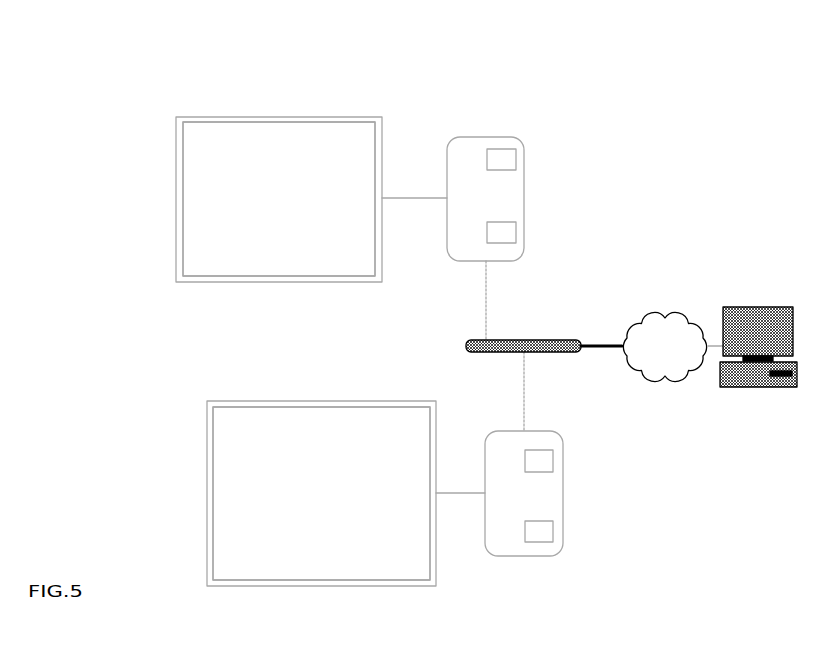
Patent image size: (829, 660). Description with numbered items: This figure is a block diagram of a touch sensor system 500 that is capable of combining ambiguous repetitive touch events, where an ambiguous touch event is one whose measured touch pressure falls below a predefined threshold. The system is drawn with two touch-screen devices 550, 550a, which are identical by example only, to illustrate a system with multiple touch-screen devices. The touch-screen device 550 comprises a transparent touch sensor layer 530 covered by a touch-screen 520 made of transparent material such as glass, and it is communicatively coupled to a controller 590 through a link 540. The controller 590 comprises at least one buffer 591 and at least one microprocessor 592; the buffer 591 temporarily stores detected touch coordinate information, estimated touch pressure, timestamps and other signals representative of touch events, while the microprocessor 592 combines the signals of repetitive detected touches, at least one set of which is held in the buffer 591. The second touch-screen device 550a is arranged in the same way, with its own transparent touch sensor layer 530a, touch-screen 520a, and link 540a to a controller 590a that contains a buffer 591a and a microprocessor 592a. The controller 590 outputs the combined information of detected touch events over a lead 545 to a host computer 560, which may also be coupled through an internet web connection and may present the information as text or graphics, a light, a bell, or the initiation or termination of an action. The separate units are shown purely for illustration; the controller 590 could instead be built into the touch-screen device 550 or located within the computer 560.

The touch sensor system 500 is at (100, 66).
The touch-screen device 550 is at (184, 117).
The touch-screen 520 is at (236, 125).
The transparent touch sensor layer 530 is at (356, 140).
The link 540 is at (420, 196).
The lead 545 is at (553, 338).
The controller user interface unit / host computer 560 is at (760, 307).
The controller 590 is at (486, 137).
The buffer 591 is at (516, 160).
The microprocessor 592 is at (516, 232).
The touch-screen device 550a is at (322, 585).
The touch-screen 520a is at (213, 485).
The transparent touch sensor layer 530a is at (235, 438).
The link 540a is at (468, 490).
The controller 590a is at (523, 556).
The buffer 591a is at (553, 460).
The microprocessor 592a is at (553, 532).